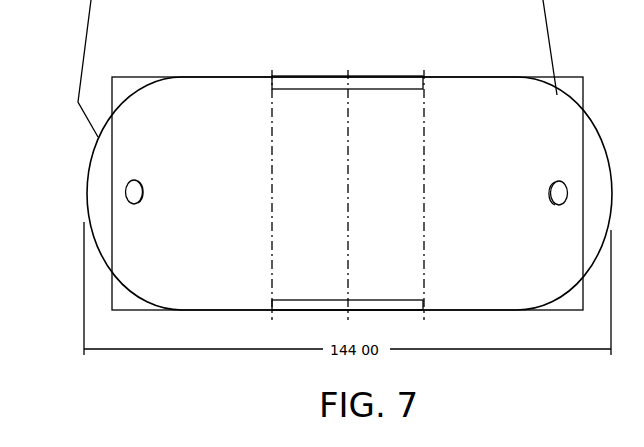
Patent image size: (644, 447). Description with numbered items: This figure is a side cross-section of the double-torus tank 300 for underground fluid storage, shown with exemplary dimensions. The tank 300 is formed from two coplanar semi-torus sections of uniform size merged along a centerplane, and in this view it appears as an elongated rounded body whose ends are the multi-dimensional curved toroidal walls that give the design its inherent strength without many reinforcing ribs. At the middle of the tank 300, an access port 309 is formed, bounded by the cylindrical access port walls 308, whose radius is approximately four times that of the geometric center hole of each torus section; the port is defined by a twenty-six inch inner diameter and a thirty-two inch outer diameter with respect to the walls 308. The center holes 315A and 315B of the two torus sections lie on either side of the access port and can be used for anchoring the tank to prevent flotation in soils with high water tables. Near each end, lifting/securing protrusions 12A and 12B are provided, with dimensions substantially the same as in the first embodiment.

The double-torus tank 300 is at (340, 46).
The access port 309 is at (372, 77).
The access port walls 308 is at (424, 82).
The center hole 315A is at (272, 76).
The center hole 315B is at (424, 76).
The lifting/securing protrusion 12A is at (137, 205).
The lifting/securing protrusion 12B is at (557, 207).